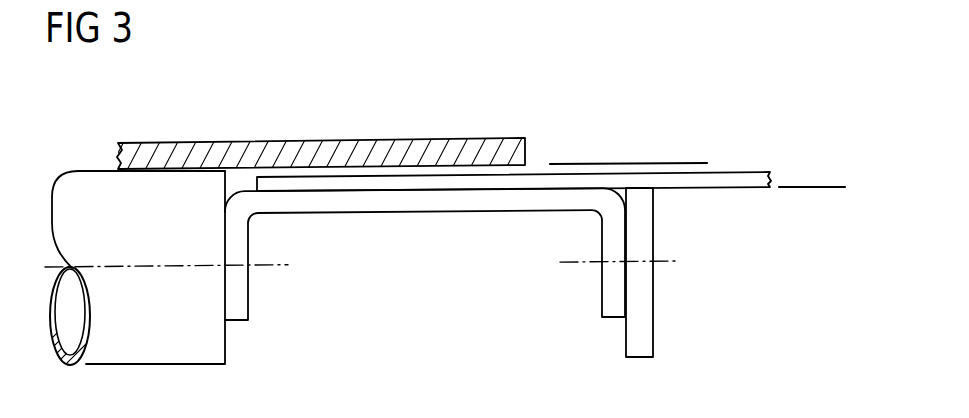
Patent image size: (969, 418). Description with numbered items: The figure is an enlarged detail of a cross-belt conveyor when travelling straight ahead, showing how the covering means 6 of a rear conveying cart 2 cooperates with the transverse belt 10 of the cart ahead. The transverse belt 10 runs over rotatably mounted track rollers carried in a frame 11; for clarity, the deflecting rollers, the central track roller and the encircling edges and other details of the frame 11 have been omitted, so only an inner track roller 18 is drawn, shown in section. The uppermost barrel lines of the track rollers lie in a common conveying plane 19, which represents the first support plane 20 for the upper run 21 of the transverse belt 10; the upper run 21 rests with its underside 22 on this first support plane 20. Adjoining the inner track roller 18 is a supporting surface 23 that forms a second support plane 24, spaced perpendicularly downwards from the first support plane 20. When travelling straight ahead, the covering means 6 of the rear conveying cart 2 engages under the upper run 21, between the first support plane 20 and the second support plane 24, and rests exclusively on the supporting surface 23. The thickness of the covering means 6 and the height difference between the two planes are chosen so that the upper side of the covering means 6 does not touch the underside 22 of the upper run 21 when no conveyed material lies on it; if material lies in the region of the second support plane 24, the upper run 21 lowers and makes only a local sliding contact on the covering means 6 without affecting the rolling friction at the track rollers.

The conveying cart 2 is at (213, 98).
The covering means 6 is at (514, 185).
The transverse belt 10 is at (325, 125).
The frame 11 is at (653, 305).
The inner track roller 18 is at (91, 170).
The conveying plane 19 is at (628, 131).
The first support plane 20 is at (615, 163).
The upper run 21 is at (318, 140).
The underside 22 is at (478, 190).
The supporting surface 23 is at (343, 192).
The second support plane 24 is at (808, 186).